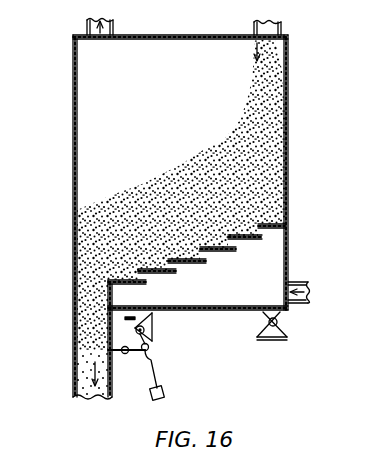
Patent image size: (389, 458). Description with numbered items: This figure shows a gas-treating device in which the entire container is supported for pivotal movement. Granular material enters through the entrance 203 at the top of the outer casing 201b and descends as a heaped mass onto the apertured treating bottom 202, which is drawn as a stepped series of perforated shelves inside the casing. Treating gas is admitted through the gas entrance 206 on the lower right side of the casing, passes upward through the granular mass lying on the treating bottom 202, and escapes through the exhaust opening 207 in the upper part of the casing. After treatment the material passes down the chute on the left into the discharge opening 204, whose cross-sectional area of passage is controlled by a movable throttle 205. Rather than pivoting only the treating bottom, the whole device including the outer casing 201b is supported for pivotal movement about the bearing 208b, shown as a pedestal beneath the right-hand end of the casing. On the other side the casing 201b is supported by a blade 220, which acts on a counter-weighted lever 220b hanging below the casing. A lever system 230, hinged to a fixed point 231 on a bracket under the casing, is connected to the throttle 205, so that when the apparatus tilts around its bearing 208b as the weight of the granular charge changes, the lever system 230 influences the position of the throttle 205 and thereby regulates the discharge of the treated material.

The outer casing 201b is at (288, 170).
The apertured treating bottom 202 is at (230, 250).
The entrance for the granular material 203 is at (280, 33).
The discharge opening 204 is at (73, 312).
The movable throttle 205 is at (105, 349).
The gas entrance 206 is at (300, 304).
The exhaust opening 207 is at (113, 32).
The bearing 208b is at (287, 330).
The blade 220 is at (145, 308).
The counter-weighted lever 220b is at (164, 392).
The lever system 230 is at (153, 360).
The fixed point 231 is at (153, 336).